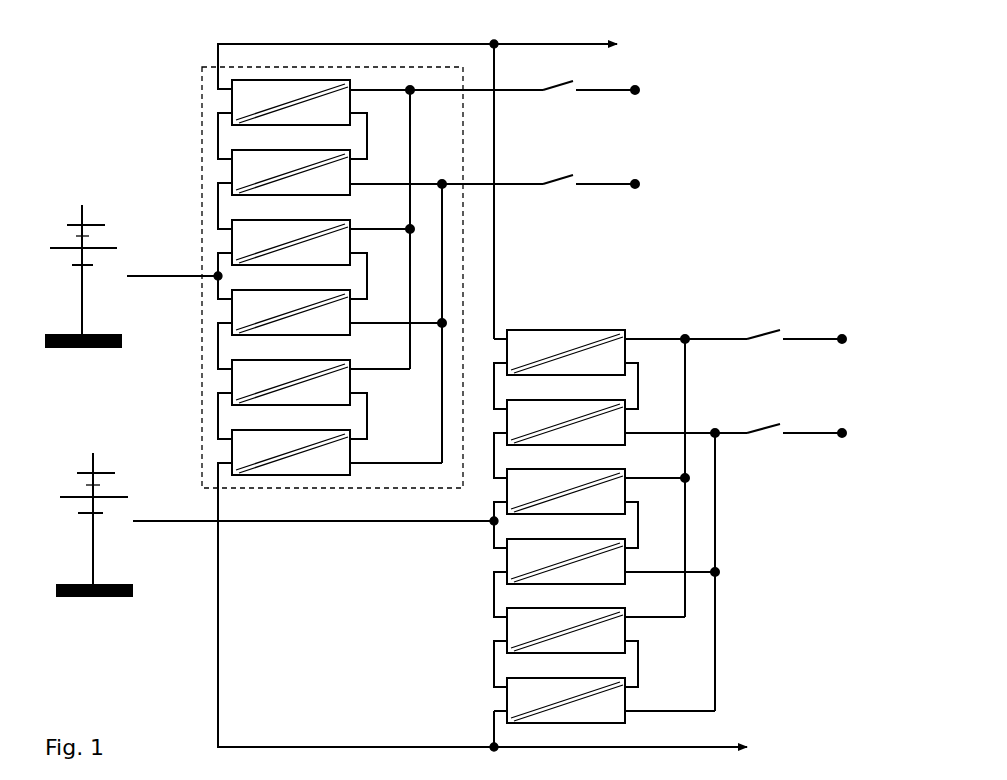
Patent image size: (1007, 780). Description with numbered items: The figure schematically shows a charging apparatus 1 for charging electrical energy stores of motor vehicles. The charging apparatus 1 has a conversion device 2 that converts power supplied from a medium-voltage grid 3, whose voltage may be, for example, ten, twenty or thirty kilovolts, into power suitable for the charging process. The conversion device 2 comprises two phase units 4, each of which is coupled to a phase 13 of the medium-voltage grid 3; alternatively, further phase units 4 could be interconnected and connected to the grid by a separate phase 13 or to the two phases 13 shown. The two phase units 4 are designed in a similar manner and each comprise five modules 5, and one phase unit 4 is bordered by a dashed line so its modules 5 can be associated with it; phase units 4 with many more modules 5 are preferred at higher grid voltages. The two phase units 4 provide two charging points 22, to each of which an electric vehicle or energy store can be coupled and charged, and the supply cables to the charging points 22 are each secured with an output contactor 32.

The charging apparatus 1 is at (116, 41).
The conversion device 2 is at (782, 53).
The medium-voltage grid 3 is at (74, 192).
The phase unit 4 is at (200, 82).
The module 5 is at (232, 103).
The phase 13 is at (165, 275).
The charging point 22 is at (635, 90).
The output contactor 32 is at (575, 201).